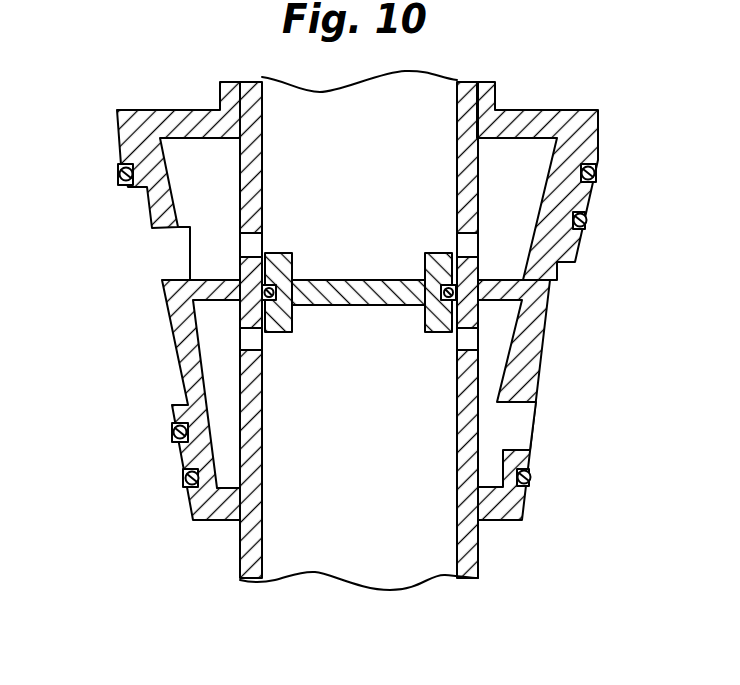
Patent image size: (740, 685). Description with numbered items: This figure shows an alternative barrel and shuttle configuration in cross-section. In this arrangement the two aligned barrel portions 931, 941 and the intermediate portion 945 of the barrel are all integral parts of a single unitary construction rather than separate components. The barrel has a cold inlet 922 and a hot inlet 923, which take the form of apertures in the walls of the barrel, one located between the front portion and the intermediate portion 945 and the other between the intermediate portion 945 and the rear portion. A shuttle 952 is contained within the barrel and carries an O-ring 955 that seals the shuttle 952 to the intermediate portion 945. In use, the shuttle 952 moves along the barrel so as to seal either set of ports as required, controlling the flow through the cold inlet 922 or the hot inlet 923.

The barrel portion 941 is at (247, 205).
The cold inlet 922 is at (465, 247).
The hot inlet 923 is at (247, 342).
The barrel portion 931 is at (465, 427).
The intermediate portion 945 is at (470, 302).
The shuttle 952 is at (356, 291).
The O-ring 955 is at (266, 291).